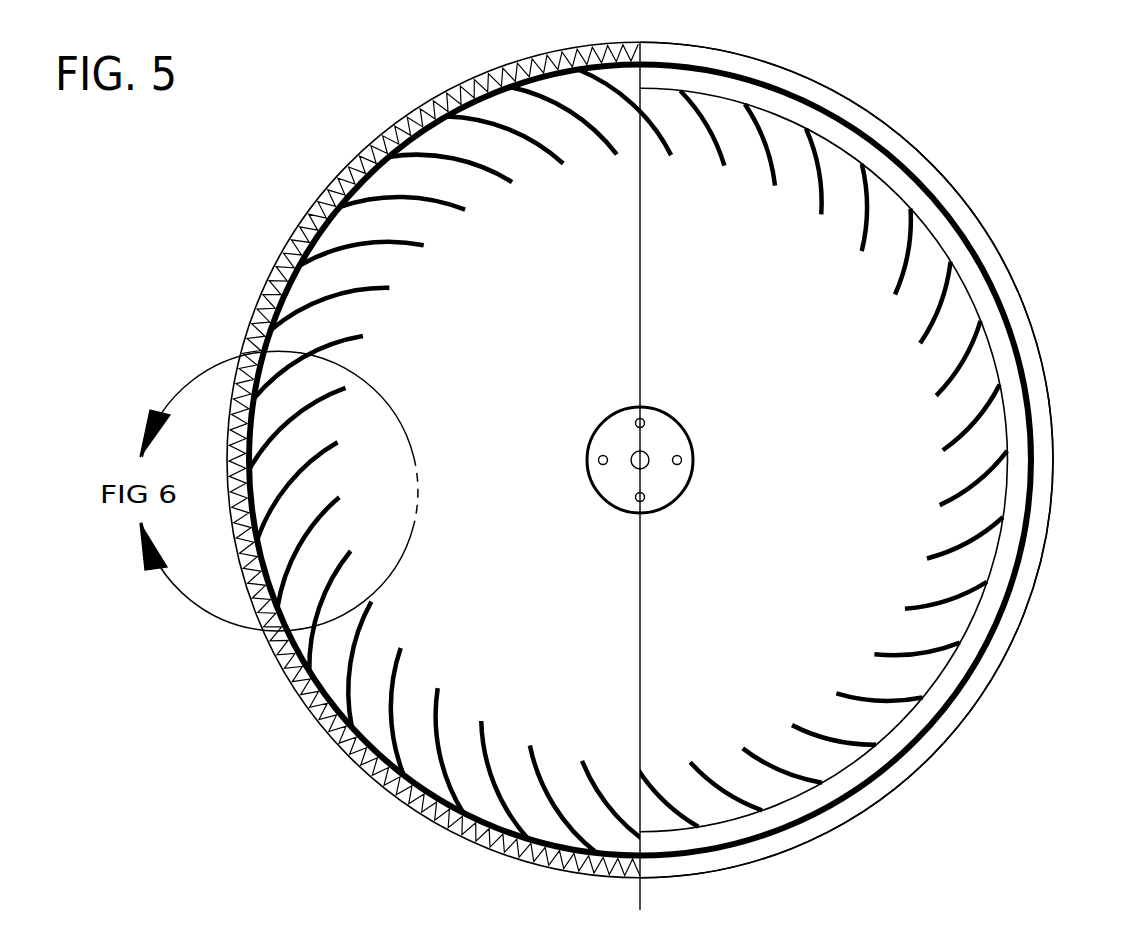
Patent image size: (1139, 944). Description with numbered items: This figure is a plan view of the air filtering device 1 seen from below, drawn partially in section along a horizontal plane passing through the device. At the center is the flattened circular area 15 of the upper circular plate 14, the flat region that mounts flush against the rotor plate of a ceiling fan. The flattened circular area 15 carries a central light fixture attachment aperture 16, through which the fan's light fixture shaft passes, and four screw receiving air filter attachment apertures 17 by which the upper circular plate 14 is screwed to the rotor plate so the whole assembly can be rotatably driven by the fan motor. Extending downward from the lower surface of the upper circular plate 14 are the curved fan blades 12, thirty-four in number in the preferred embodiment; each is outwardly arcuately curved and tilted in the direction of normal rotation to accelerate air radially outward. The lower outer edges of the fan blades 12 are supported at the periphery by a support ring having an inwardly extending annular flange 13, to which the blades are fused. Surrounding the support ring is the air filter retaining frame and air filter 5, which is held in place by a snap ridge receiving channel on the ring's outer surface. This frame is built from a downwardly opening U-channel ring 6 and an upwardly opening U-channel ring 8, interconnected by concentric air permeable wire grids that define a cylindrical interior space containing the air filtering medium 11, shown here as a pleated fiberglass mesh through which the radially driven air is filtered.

The air filtering device 1 is at (790, 63).
The air filter retaining frame and air filter 5 is at (513, 57).
The downwardly opening U-channel ring 6 is at (326, 193).
The upwardly opening U-channel ring 8 is at (896, 146).
The air filtering medium 11 is at (253, 313).
The fan blades 12 is at (942, 317).
The annular flange 13 is at (949, 236).
The upper circular plate 14 is at (716, 651).
The flattened circular area 15 is at (673, 433).
The light fixture attachment aperture 16 is at (647, 466).
The air filter attachment apertures 17 is at (642, 499).